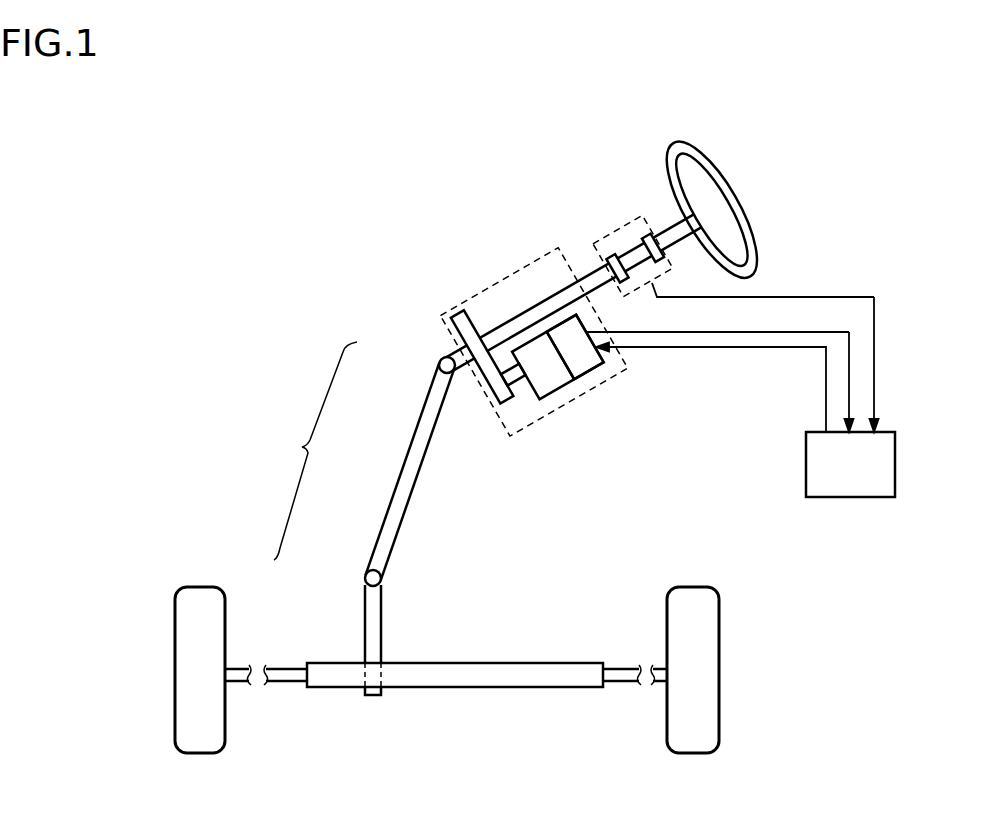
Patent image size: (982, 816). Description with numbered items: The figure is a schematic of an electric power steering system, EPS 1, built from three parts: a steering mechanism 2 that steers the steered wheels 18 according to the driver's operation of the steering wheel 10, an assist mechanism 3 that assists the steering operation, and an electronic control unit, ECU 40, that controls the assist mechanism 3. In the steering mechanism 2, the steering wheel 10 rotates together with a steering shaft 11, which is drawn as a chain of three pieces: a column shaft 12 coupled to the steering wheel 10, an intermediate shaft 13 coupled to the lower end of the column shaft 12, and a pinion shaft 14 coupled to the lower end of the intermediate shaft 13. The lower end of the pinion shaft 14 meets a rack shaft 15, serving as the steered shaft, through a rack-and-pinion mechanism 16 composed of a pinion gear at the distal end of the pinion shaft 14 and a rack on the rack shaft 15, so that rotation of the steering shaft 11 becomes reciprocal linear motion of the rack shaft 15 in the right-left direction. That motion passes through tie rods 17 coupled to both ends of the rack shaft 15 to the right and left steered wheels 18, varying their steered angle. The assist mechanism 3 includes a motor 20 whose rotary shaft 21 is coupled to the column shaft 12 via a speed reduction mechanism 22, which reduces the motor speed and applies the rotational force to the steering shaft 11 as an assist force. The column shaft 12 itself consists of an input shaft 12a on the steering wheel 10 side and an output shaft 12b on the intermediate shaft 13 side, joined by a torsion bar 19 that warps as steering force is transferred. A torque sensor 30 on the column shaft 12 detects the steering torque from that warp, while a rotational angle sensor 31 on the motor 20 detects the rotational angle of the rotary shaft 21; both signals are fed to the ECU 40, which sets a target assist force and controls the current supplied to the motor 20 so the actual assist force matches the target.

The electric power steering system 1 is at (230, 205).
The steering mechanism 2 is at (266, 360).
The assist mechanism 3 is at (490, 283).
The steering wheel 10 is at (743, 203).
The steering shaft 11 is at (310, 451).
The column shaft 12 is at (437, 357).
The input shaft 12a is at (673, 220).
The output shaft 12b is at (543, 290).
The intermediate shaft 13 is at (402, 467).
The pinion shaft 14 is at (362, 589).
The rack shaft 15 is at (528, 687).
The rack-and-pinion mechanism 16 is at (341, 650).
The tie rods 17 is at (286, 684).
The steered wheels 18 is at (195, 756).
The torsion bar 19 is at (625, 253).
The motor 20 is at (557, 390).
The rotary shaft 21 is at (511, 405).
The speed reduction mechanism 22 is at (497, 397).
The torque sensor 30 is at (630, 222).
The rotational angle sensor 31 is at (597, 372).
The electronic control unit 40 is at (897, 464).